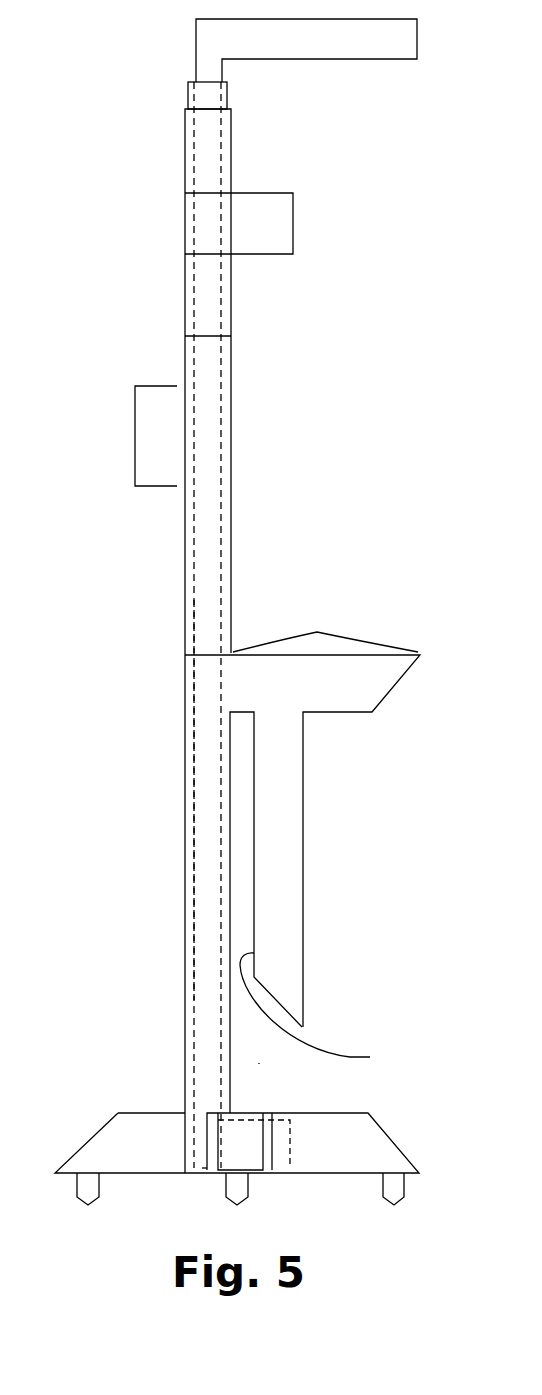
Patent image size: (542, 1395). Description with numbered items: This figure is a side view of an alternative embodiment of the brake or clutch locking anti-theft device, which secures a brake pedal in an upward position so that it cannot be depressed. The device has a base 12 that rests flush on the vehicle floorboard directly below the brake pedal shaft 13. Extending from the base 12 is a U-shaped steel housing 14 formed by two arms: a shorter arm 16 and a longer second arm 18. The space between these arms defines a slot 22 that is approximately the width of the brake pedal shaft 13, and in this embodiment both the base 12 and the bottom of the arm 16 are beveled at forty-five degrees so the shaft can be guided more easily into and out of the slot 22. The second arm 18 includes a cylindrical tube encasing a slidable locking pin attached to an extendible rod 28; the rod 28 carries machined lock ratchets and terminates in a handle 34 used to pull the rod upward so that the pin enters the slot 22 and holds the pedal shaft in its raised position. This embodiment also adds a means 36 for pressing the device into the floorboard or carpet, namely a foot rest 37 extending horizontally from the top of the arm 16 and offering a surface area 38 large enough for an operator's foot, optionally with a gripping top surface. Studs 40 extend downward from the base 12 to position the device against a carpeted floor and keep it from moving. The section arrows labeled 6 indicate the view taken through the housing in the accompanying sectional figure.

The section line / view direction 6 is at (240, 386).
The base 12 is at (93, 1141).
The brake pedal shaft 13 is at (259, 1045).
The U-shaped housing 14 is at (185, 775).
The arm 16 is at (288, 902).
The second arm 18 is at (185, 710).
The slot 22 is at (324, 1013).
The extendible rod 28 is at (207, 900).
The handle 34 is at (205, 35).
The means for pressing the device into the floorboard 36 is at (418, 631).
The foot rest 37 is at (302, 841).
The surface area 38 is at (325, 625).
The studs 40 is at (248, 1185).